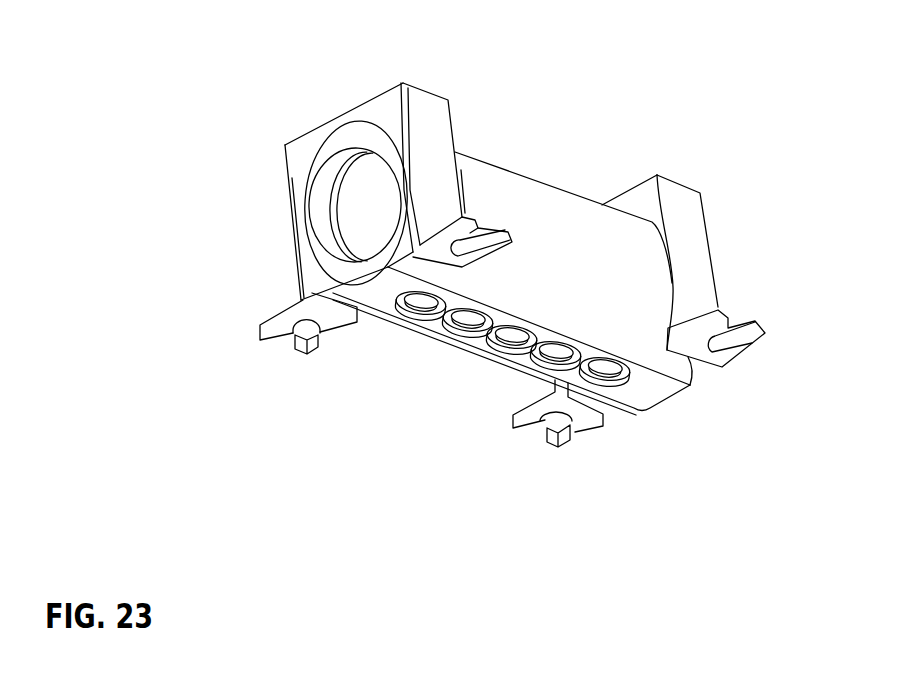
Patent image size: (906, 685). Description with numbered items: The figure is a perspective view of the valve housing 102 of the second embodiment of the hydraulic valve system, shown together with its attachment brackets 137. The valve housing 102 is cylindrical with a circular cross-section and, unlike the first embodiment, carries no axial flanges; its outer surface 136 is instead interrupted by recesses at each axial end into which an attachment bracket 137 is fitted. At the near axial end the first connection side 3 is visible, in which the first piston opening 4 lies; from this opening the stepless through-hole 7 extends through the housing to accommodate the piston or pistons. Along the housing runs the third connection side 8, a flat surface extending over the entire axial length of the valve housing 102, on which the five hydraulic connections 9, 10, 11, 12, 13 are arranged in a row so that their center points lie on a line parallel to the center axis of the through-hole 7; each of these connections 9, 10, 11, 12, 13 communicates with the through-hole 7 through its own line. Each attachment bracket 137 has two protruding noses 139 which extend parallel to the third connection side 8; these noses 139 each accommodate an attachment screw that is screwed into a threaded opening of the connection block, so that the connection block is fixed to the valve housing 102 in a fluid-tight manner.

The first connection side 3 is at (291, 177).
The first piston opening 4 is at (306, 228).
The through-hole 7 is at (355, 221).
The third connection side 8 is at (632, 388).
The hydraulic connection 9 is at (395, 302).
The hydraulic connection 10 is at (437, 326).
The hydraulic connection 11 is at (490, 338).
The hydraulic connection 12 is at (530, 362).
The hydraulic connection 13 is at (585, 376).
The valve housing 102 is at (220, 109).
The outer surface 136 is at (527, 203).
The attachment bracket 137 is at (405, 103).
The protruding nose 139 is at (445, 262).